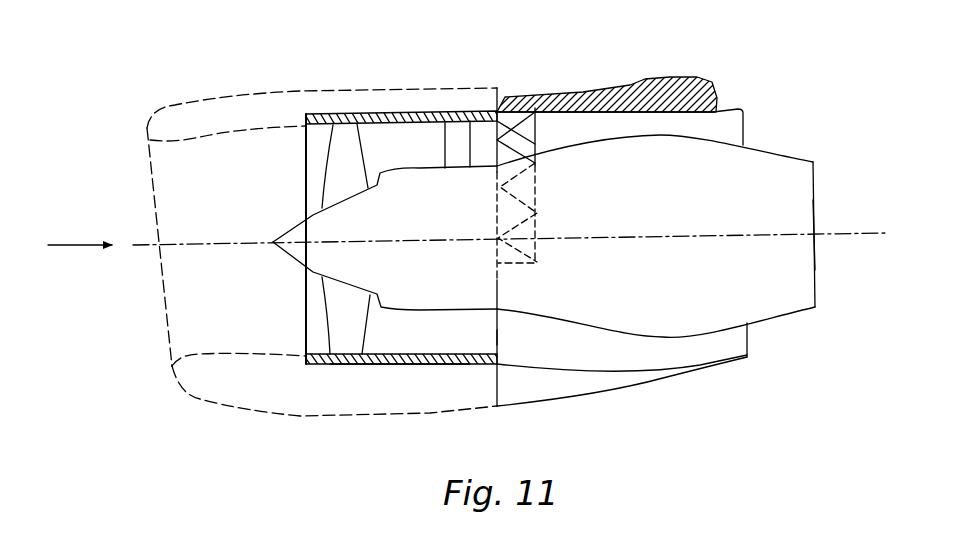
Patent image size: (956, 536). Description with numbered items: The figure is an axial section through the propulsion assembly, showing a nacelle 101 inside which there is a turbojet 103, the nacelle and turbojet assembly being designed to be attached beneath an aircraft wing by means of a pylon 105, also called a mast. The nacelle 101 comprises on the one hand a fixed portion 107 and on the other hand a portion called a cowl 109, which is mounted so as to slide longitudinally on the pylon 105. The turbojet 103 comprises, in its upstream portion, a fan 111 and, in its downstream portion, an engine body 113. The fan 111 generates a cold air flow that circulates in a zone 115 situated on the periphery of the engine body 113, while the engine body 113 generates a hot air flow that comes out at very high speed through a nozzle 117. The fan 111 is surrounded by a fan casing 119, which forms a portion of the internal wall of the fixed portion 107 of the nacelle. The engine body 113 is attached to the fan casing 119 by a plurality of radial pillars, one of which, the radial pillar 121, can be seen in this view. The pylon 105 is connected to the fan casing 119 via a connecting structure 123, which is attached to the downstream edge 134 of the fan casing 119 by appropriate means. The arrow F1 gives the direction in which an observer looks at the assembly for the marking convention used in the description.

The arrow F1 is at (70, 243).
The nacelle 101 is at (237, 86).
The turbojet 103 is at (780, 154).
The pylon 105 is at (713, 100).
The fixed portion 107 is at (358, 102).
The cowl 109 is at (570, 397).
The fan 111 is at (343, 327).
The engine body 113 is at (680, 337).
The zone 115 is at (630, 352).
The nozzle 117 is at (818, 217).
The fan casing 119 is at (397, 366).
The radial pillar 121 is at (456, 145).
The connecting structure 123 is at (536, 145).
The downstream edge 134 is at (500, 336).